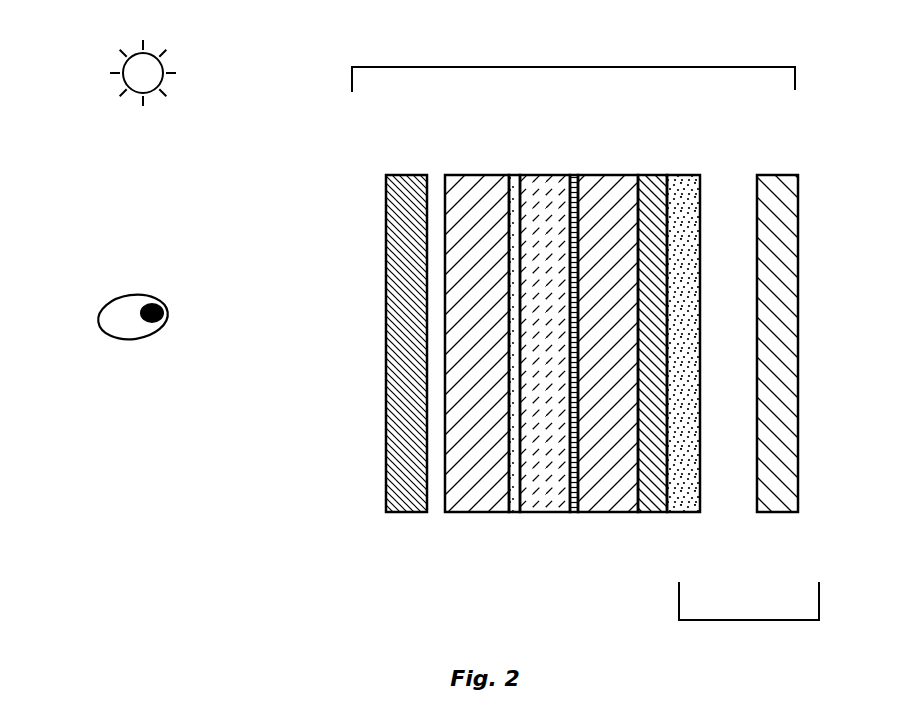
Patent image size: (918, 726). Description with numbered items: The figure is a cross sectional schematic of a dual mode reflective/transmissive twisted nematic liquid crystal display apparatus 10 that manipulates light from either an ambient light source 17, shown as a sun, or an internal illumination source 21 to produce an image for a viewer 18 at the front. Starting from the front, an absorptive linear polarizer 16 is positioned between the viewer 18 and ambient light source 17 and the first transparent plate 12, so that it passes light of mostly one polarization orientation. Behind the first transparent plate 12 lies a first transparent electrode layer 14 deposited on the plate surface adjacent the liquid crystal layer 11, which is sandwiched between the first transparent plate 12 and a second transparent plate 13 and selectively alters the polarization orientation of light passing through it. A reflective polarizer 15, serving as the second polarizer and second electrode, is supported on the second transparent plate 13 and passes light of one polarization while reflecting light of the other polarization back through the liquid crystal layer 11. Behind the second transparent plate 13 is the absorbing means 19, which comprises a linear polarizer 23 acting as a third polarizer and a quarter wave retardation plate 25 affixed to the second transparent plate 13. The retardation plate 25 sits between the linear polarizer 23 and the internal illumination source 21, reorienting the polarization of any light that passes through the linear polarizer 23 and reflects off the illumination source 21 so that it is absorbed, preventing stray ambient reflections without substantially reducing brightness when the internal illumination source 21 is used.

The display apparatus 10 is at (578, 67).
The liquid crystal layer 11 is at (553, 175).
The first transparent plate 12 is at (482, 175).
The second transparent plate 13 is at (610, 175).
The first transparent electrode layer 14 is at (514, 512).
The reflective polarizer 15 is at (575, 512).
The absorptive linear polarizer 16 is at (408, 512).
The ambient light source 17 is at (133, 95).
The viewer 18 is at (107, 335).
The absorbing means 19 is at (749, 620).
The internal illumination source 21 is at (780, 175).
The linear polarizer 23 is at (657, 512).
The ¼ wave retardation plate 25 is at (693, 512).